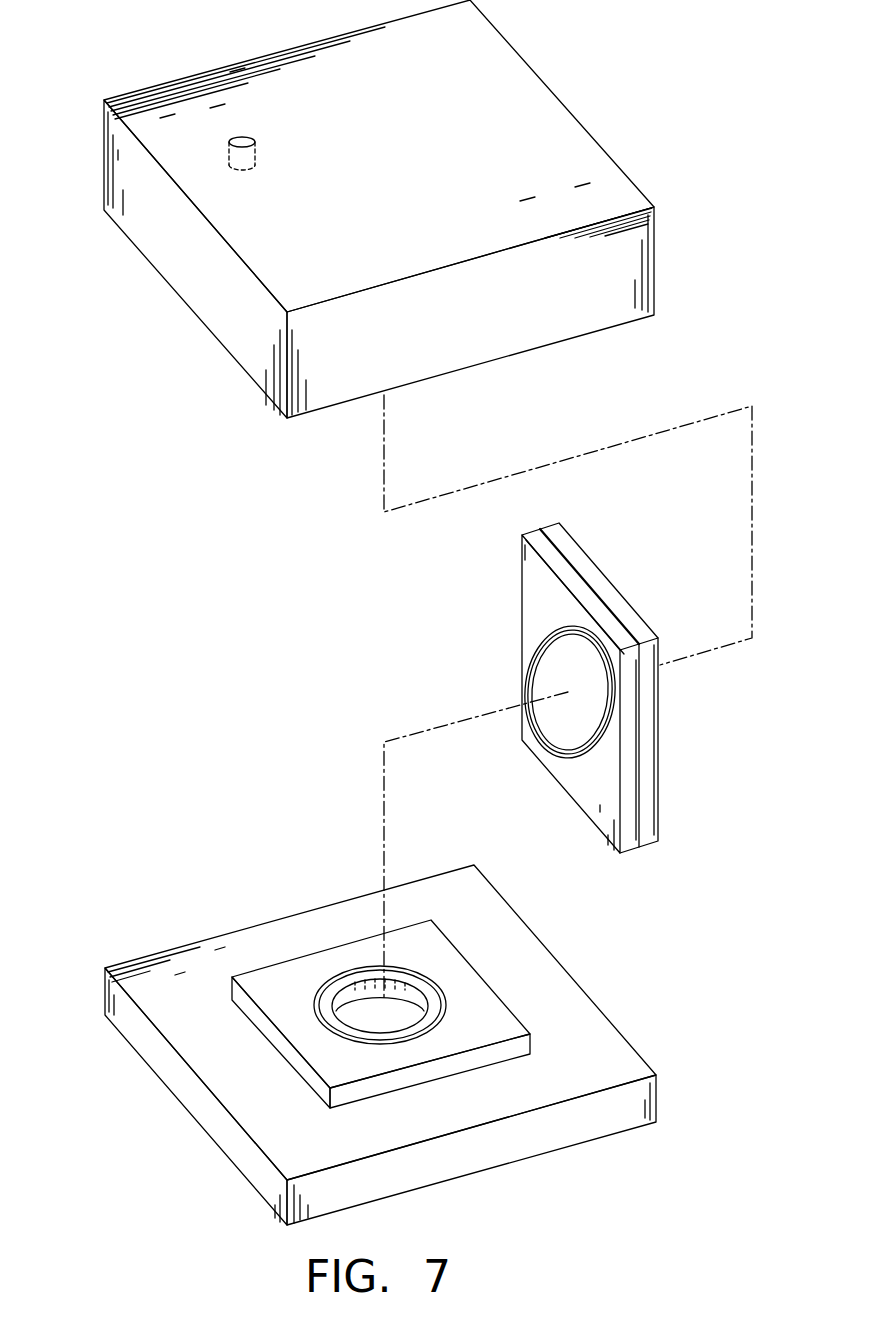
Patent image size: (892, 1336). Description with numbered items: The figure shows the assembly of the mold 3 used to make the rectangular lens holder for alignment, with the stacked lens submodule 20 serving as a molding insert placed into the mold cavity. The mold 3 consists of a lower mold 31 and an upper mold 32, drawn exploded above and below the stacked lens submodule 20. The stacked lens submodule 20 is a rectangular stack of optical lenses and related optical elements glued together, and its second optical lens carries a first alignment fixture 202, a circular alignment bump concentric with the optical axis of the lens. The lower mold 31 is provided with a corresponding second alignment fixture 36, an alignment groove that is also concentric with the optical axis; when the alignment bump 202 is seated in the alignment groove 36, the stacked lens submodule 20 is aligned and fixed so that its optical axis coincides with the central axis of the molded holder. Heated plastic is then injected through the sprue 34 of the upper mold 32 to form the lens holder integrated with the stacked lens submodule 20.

The mold 3 is at (430, 209).
The upper mold 32 is at (555, 148).
The sprue 34 is at (240, 136).
The stacked lens submodule 20 is at (532, 688).
The first alignment fixture 202 is at (530, 644).
The lower mold 31 is at (380, 1048).
The second alignment fixture 36 is at (345, 975).